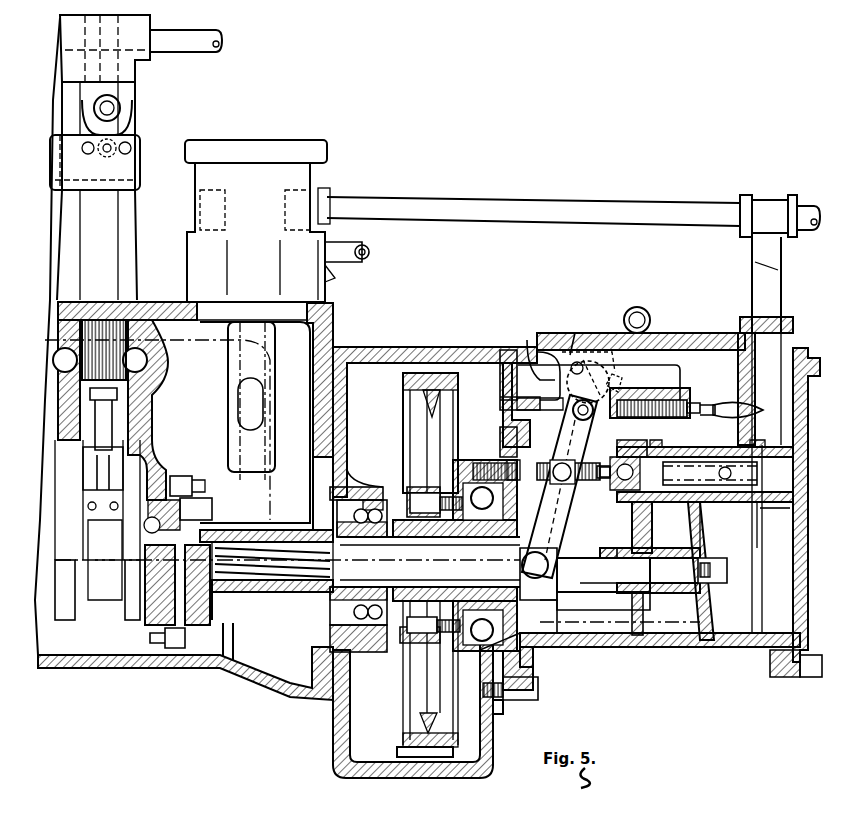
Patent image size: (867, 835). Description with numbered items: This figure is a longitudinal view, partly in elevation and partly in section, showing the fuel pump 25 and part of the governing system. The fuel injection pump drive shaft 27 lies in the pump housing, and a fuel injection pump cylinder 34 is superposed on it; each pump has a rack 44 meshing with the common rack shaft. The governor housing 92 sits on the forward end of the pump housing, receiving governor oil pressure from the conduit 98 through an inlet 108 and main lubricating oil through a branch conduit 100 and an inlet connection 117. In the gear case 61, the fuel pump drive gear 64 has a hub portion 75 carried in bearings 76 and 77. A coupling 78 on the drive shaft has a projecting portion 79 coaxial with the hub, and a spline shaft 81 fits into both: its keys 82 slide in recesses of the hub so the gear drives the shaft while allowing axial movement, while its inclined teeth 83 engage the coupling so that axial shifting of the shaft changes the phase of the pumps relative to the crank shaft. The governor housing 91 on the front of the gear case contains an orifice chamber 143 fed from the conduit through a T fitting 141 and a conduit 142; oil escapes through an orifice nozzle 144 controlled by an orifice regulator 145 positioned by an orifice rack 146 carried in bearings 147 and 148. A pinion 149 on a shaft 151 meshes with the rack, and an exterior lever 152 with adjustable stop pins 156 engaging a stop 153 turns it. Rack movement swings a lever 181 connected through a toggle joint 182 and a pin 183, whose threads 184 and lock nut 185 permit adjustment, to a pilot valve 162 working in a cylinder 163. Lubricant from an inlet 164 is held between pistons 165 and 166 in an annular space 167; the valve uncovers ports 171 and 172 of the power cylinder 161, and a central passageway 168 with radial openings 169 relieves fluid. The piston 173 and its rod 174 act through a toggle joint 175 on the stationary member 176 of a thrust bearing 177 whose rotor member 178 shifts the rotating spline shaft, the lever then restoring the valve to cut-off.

The fuel injection pump cylinder 34 is at (137, 224).
The governor housing 92 is at (268, 165).
The inlet 108 is at (330, 194).
The conduit 98 is at (424, 210).
The branch conduit 100 is at (369, 253).
The inlet connection 117 is at (331, 270).
The gear case 61 is at (405, 351).
The rack 44 is at (60, 368).
The teeth 83 is at (258, 560).
The spline shaft 81 is at (318, 533).
The teeth or key members 82 is at (392, 540).
The rotor member 178 is at (465, 572).
The bearing 76 is at (354, 616).
The hub portion 75 is at (394, 612).
The fuel pump drive gear 64 is at (408, 712).
The thrust bearing 177 is at (462, 650).
The bearing 77 is at (491, 702).
The projecting portion 79 is at (263, 598).
The coupling 78 is at (197, 627).
The fuel injection pump drive shaft 27 is at (124, 607).
The fuel pump 25 is at (80, 670).
The pinion 149 is at (540, 378).
The shaft 151 is at (572, 332).
The lever 152 is at (606, 362).
The bearing 148 is at (632, 383).
The orifice rack 146 is at (600, 420).
The adjustable stop pins 156 is at (596, 309).
The stop 153 is at (538, 360).
The bearing 147 is at (531, 364).
The orifice nozzle 144 is at (700, 402).
The orifice regulator 145 is at (728, 410).
The orifice chamber 143 is at (760, 378).
The conduit 142 is at (766, 251).
The T fitting 141 is at (757, 212).
The lever 181 is at (580, 441).
The threads 184 is at (598, 446).
The toggle joint 182 is at (642, 457).
The pin 183 is at (558, 480).
The lock nut 185 is at (616, 485).
The radial openings 169 is at (613, 504).
The piston 165 is at (635, 503).
The central passageway 168 is at (790, 451).
The inlet 164 is at (735, 475).
The cylinder 163 is at (772, 485).
The piston 166 is at (755, 485).
The port 172 is at (800, 545).
The pilot valve 162 is at (712, 486).
The annular space 167 is at (715, 484).
The port 171 is at (653, 502).
The piston 173 is at (706, 609).
The rod 174 is at (587, 647).
The toggle joint 175 is at (563, 648).
The stationary member 176 is at (533, 662).
The power cylinder 161 is at (727, 648).
The governor housing 91 is at (673, 648).